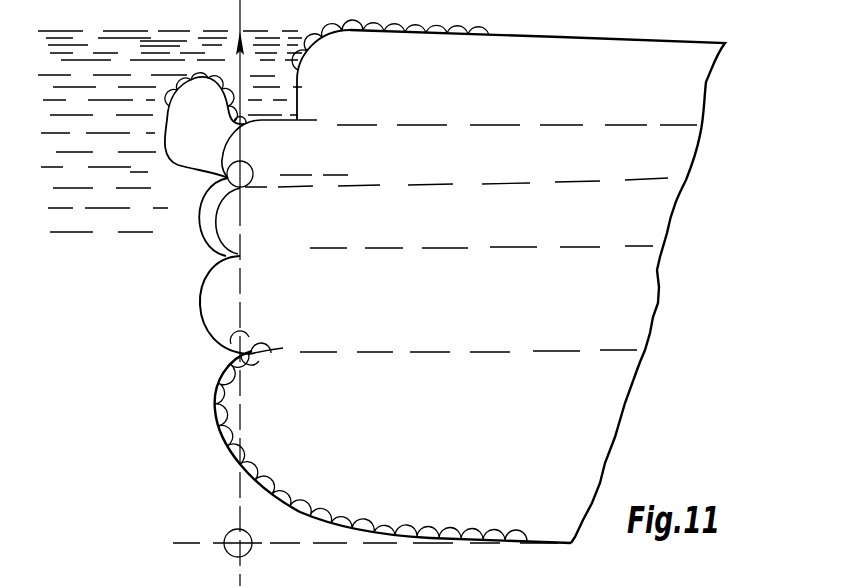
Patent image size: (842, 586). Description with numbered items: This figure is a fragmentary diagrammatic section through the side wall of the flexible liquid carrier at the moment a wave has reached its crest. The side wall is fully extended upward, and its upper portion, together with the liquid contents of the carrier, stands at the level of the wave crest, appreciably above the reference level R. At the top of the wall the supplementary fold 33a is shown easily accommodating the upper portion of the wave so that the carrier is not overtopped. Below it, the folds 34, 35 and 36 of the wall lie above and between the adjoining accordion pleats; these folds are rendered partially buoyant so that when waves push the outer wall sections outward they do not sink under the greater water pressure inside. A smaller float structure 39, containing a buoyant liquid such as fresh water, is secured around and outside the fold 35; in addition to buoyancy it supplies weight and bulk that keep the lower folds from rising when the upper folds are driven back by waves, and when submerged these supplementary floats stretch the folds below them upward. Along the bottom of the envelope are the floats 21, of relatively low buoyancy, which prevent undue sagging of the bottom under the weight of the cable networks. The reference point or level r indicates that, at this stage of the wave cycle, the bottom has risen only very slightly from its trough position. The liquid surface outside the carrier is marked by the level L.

The floats 21 is at (334, 513).
The supplementary fold 33a is at (322, 42).
The fold 34 is at (222, 160).
The fold 35 is at (222, 243).
The fold 36 is at (206, 328).
The float structure 39 is at (201, 237).
The reference level R is at (250, 173).
The reference point or level r is at (351, 543).
The liquid level L is at (134, 30).